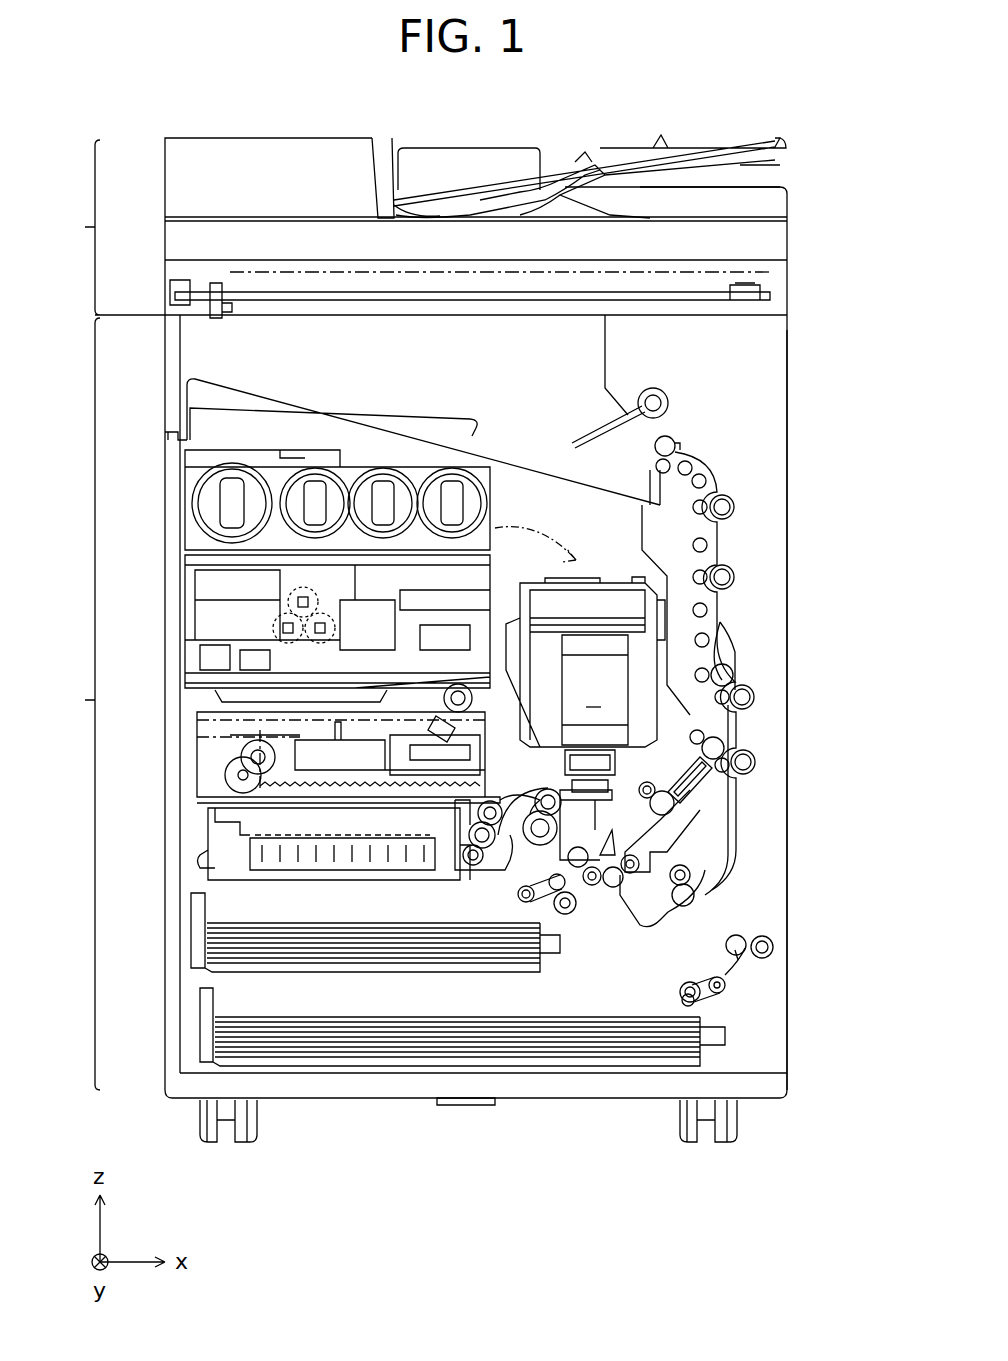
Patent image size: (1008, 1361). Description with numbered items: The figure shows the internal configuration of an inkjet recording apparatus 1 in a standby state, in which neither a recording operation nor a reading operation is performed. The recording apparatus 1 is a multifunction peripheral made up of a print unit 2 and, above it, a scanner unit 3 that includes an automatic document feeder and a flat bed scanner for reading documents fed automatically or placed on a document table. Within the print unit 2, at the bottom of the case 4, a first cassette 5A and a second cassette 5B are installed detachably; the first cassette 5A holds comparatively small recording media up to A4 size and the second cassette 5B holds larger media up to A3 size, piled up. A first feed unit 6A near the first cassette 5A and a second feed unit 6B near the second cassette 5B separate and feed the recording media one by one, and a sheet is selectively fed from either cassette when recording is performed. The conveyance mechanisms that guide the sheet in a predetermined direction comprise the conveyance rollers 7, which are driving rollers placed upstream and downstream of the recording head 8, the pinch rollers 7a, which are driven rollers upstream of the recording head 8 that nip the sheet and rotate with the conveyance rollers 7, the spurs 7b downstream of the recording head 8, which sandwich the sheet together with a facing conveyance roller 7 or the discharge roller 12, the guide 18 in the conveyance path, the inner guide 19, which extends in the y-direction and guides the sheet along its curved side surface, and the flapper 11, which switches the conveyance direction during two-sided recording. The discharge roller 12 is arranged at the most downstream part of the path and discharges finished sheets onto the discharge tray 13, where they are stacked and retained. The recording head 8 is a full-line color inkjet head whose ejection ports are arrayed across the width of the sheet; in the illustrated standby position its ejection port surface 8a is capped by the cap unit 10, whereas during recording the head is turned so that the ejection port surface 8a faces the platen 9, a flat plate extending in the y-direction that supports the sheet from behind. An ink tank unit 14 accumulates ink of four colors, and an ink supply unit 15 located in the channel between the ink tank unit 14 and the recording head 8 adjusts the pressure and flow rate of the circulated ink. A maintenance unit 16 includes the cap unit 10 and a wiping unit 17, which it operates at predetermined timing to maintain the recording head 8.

The recording apparatus 1 is at (722, 120).
The print unit 2 is at (84, 704).
The scanner unit 3 is at (116, 227).
The case 4 is at (788, 398).
The first cassette 5A is at (200, 922).
The second cassette 5B is at (208, 1035).
The first feed unit 6A is at (575, 890).
The second feed unit 6B is at (733, 992).
The conveyance rollers 7 is at (735, 507).
The pinch rollers 7a is at (632, 874).
The spurs 7b is at (680, 458).
The recording head 8 is at (585, 684).
The ejection port surface 8a is at (702, 790).
The platen 9 is at (675, 808).
The cap unit 10 is at (652, 797).
The flapper 11 is at (725, 655).
The discharge roller 12 is at (672, 440).
The discharge tray 13 is at (435, 448).
The ink tank unit 14 is at (192, 472).
The ink supply unit 15 is at (192, 624).
The maintenance unit 16 is at (205, 850).
The wiping unit 17 is at (205, 734).
The guide 18 is at (718, 548).
The inner guide 19 is at (720, 888).